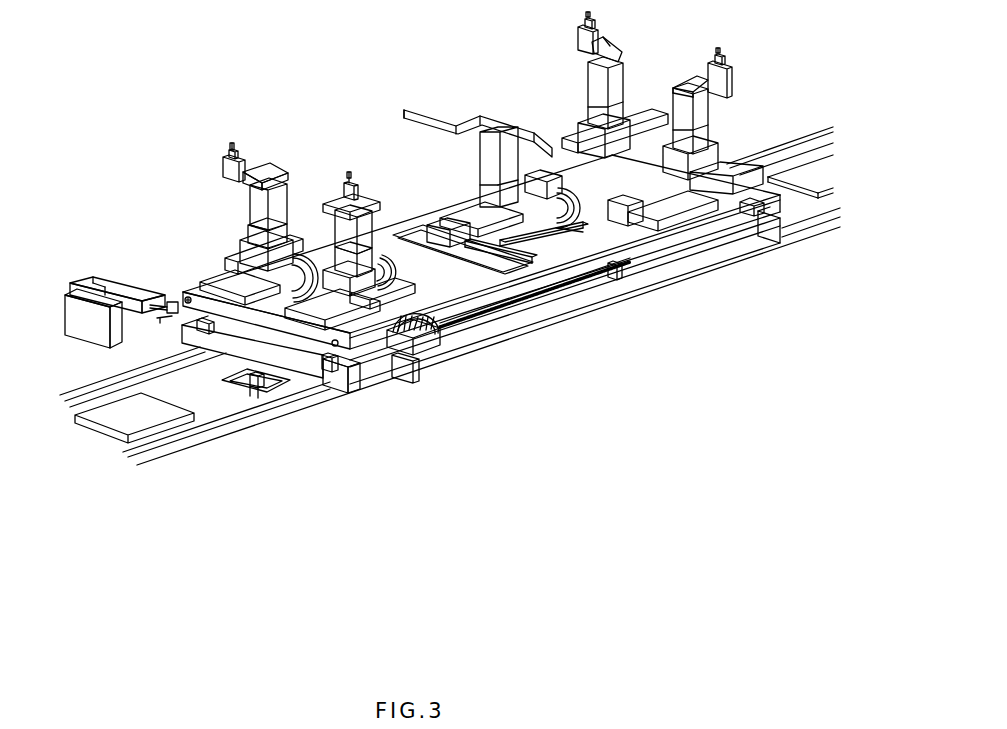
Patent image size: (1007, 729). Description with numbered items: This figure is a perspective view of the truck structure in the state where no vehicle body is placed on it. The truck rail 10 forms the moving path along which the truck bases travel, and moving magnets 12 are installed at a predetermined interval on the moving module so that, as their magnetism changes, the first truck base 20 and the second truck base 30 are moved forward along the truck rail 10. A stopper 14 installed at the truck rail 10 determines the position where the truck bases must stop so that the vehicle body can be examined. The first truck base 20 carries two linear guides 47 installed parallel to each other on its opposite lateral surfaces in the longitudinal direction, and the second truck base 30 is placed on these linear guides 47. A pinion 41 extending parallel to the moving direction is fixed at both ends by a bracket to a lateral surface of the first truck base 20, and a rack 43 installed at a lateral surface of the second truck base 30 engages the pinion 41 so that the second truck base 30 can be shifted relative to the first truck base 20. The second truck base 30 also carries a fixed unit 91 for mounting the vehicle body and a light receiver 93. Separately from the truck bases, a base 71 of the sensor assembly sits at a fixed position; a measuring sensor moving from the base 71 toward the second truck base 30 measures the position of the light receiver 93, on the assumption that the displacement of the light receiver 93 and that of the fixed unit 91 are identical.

The truck rail 10 is at (177, 430).
The moving magnets 12 is at (817, 170).
The stopper 14 is at (257, 388).
The first truck base 20 is at (727, 253).
The second truck base 30 is at (638, 250).
The pinion 41 is at (486, 327).
The rack 43 is at (420, 332).
The linear guides 47 is at (327, 382).
The base 71 is at (77, 320).
The fixed unit 91 is at (224, 164).
The light receiver 93 is at (187, 295).